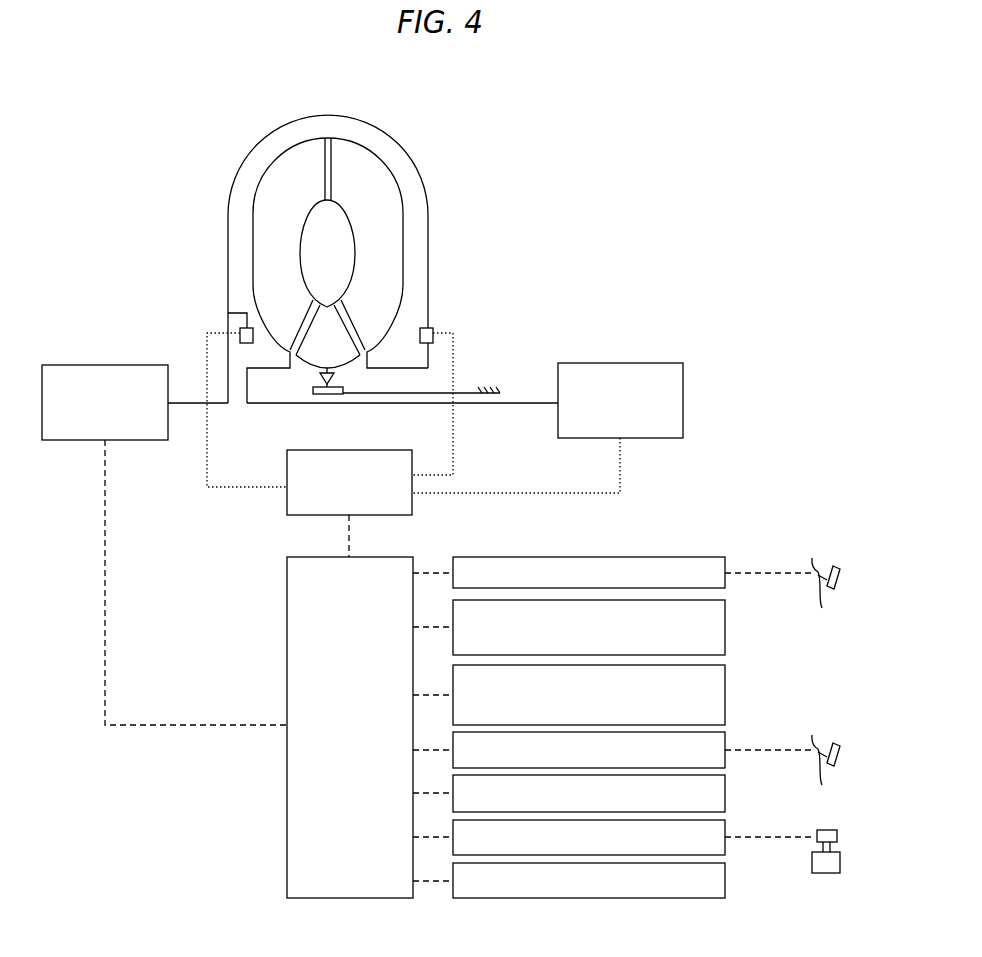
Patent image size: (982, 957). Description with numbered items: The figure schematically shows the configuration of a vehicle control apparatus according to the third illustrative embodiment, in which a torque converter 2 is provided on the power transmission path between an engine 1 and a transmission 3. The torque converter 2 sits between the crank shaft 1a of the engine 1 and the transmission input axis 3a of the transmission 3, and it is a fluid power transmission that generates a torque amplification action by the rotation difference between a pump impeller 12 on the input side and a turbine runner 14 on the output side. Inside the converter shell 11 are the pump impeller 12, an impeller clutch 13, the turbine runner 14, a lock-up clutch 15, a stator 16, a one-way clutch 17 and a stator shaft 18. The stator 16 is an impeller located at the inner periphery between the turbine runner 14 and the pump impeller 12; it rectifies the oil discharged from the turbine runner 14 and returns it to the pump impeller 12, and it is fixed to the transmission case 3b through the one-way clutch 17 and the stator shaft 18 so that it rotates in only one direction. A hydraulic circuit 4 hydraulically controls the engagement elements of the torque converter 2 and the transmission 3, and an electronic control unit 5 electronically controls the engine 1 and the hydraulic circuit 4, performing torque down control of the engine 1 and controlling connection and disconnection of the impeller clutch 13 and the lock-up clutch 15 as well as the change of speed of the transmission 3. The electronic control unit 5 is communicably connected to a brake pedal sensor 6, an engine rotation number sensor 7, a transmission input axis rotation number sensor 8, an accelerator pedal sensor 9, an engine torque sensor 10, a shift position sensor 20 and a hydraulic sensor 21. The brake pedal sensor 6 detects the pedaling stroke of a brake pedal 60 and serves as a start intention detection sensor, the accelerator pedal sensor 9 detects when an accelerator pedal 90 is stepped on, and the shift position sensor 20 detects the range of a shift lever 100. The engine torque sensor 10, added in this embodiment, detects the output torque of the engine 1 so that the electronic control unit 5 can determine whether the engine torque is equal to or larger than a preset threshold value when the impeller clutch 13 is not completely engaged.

The engine 1 is at (105, 365).
The crank shaft 1a is at (185, 402).
The torque converter 2 is at (428, 162).
The transmission 3 is at (620, 362).
The transmission input axis 3a is at (536, 402).
The transmission case 3b is at (486, 390).
The hydraulic circuit 4 is at (352, 450).
The electronic control unit 5 is at (378, 556).
The brake pedal sensor 6 is at (725, 580).
The engine rotation number sensor 7 is at (725, 625).
The transmission input axis rotation number sensor 8 is at (725, 692).
The accelerator pedal sensor 9 is at (725, 758).
The engine torque sensor 10 is at (725, 793).
The converter shell 11 is at (247, 168).
The pump impeller 12 is at (343, 152).
The impeller clutch 13 is at (434, 330).
The turbine runner 14 is at (262, 203).
The lock-up clutch 15 is at (238, 333).
The stator 16 is at (335, 292).
The one-way clutch 17 is at (316, 379).
The stator shaft 18 is at (398, 392).
The shift position sensor 20 is at (725, 845).
The hydraulic sensor 21 is at (725, 878).
The brake pedal 60 is at (822, 608).
The accelerator pedal 90 is at (822, 785).
The shift lever 100 is at (825, 874).